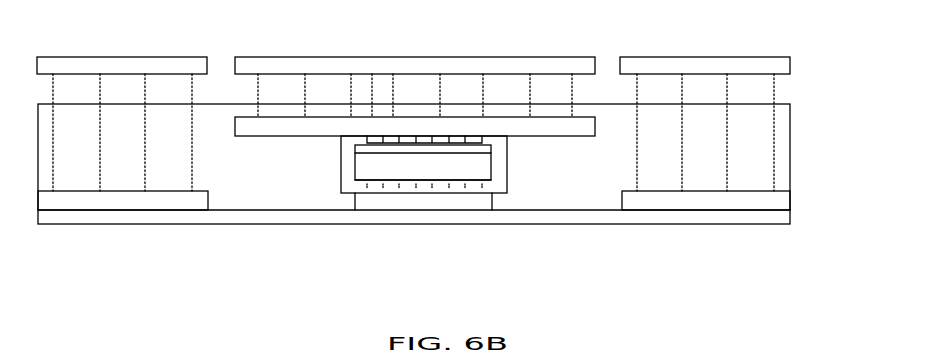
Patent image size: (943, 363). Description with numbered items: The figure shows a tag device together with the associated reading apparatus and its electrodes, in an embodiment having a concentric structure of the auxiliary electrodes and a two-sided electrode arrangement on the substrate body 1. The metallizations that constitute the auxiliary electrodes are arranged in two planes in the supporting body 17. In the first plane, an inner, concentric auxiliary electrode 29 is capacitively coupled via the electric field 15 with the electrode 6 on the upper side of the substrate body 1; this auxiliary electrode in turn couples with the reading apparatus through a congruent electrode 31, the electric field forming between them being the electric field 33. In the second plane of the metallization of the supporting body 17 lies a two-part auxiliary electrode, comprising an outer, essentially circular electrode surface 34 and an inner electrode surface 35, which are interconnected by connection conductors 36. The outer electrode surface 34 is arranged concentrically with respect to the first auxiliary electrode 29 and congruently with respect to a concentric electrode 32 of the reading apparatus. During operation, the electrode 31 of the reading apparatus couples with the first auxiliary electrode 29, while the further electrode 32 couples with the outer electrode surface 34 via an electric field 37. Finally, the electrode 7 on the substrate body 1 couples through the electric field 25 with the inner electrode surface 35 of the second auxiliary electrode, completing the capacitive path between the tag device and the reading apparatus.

The substrate body 1 is at (473, 166).
The electrode 6 is at (490, 148).
The electrode 7 is at (485, 180).
The electric field 15 is at (367, 141).
The supporting body 17 is at (123, 147).
The electric field 25 is at (367, 187).
The inner, concentric auxiliary electrode 29 is at (254, 136).
The congruent electrode 31 is at (268, 57).
The concentric electrode 32 is at (111, 57).
The electric field 33 is at (306, 93).
The outer electrode surface 34 is at (177, 210).
The inner electrode surface 35 is at (423, 212).
The connection conductors 36 is at (267, 210).
The electric field 37 is at (53, 100).